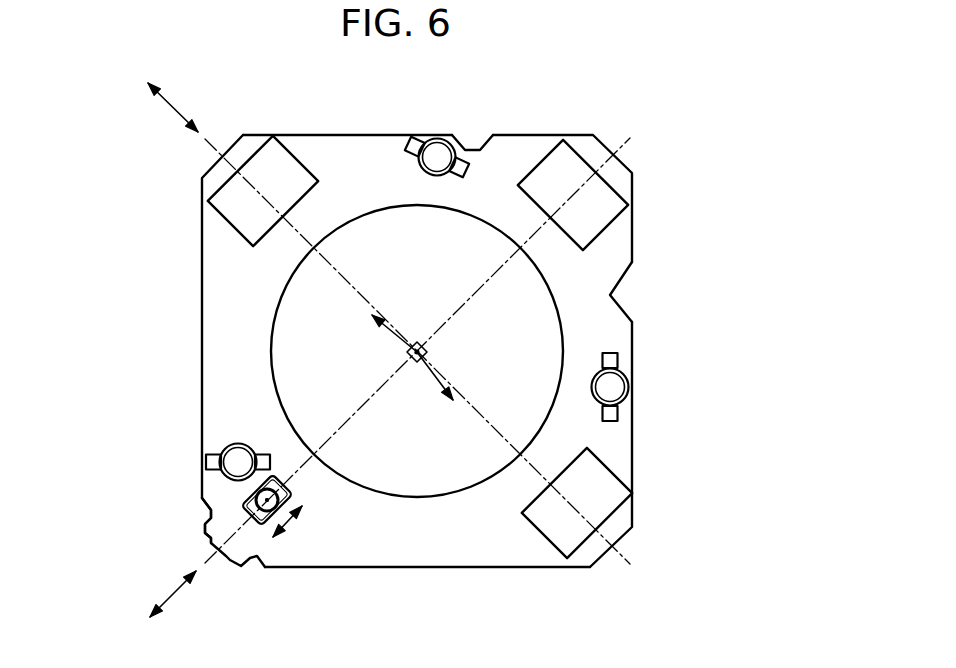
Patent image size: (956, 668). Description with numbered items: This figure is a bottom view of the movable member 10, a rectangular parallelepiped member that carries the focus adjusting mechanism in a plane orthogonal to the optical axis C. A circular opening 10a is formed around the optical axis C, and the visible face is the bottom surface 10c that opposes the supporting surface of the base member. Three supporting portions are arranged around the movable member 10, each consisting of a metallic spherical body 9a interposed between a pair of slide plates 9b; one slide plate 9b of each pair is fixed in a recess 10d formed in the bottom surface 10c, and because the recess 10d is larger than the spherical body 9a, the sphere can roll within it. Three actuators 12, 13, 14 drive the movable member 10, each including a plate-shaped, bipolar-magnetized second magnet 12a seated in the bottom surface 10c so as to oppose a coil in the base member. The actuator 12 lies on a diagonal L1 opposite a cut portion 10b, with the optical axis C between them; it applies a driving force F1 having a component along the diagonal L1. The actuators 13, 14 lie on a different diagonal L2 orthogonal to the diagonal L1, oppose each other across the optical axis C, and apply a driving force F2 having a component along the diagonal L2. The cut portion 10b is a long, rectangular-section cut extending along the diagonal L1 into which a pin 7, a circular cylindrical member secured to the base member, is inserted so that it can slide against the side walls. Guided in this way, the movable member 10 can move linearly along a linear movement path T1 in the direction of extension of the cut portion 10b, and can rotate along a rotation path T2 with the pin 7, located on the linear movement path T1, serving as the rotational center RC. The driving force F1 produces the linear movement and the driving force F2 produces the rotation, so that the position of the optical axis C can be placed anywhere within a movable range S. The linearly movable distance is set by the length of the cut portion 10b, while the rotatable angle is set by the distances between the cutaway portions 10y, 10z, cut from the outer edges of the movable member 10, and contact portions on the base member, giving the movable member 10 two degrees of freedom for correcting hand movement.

The movable member 10 is at (423, 328).
The circular opening 10a is at (271, 343).
The cut portion 10b is at (245, 513).
The bottom surface 10c is at (438, 568).
The recess 10d is at (447, 150).
The cutaway portion 10y is at (465, 144).
The cutaway portion 10z is at (622, 300).
The spherical body 9a is at (424, 280).
The slide plate 9b is at (413, 145).
The second magnet 12a is at (425, 347).
The actuator 12 is at (604, 221).
The actuator 13 is at (607, 457).
The actuator 14 is at (234, 229).
The pin 7 is at (261, 524).
The diagonal L1 is at (634, 146).
The diagonal L2 is at (623, 546).
The optical axis C is at (416, 342).
The movable range S is at (417, 363).
The linear movement path T1 is at (290, 518).
The rotation path T2 is at (392, 333).
The driving force F1 is at (172, 596).
The driving force F2 is at (172, 101).
The rotational center RC is at (267, 499).